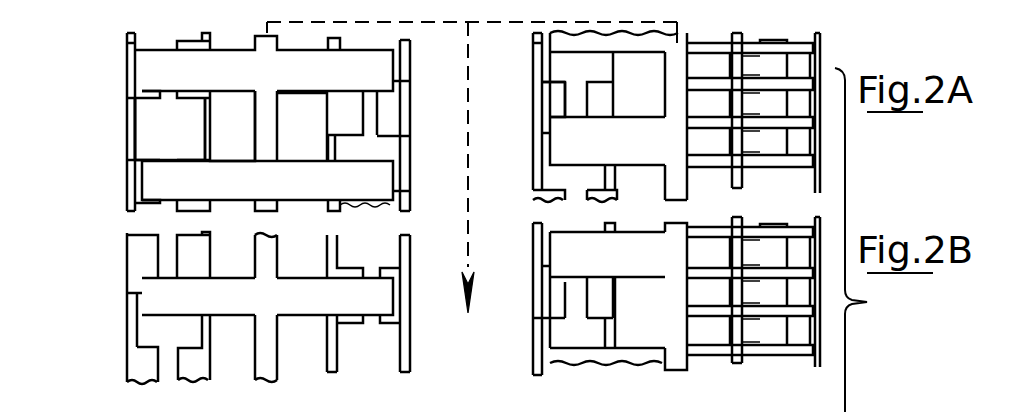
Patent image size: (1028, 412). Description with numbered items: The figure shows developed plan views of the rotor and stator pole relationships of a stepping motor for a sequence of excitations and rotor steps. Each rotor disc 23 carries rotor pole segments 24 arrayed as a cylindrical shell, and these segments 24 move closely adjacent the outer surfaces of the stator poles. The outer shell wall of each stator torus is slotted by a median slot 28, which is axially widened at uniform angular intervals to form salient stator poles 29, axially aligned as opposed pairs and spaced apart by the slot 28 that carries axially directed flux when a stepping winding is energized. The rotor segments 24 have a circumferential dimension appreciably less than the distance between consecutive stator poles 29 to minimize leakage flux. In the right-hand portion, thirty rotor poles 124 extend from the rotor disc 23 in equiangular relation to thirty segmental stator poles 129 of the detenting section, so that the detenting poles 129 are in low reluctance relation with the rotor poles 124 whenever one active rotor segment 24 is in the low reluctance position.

In FIG. 2A, the rotor disc 23 is at (260, 124).
In FIG. 2A, the rotor pole segments 24 is at (373, 85).
In FIG. 2A, the median slot 28 is at (170, 100).
In FIG. 2B, the median slot 28 is at (368, 271).
In FIG. 2B, the salient stator poles 29 is at (193, 256).
In FIG. 2A, the rotor poles 124 is at (772, 168).
In FIG. 2B, the segmental stator poles 129 is at (750, 362).